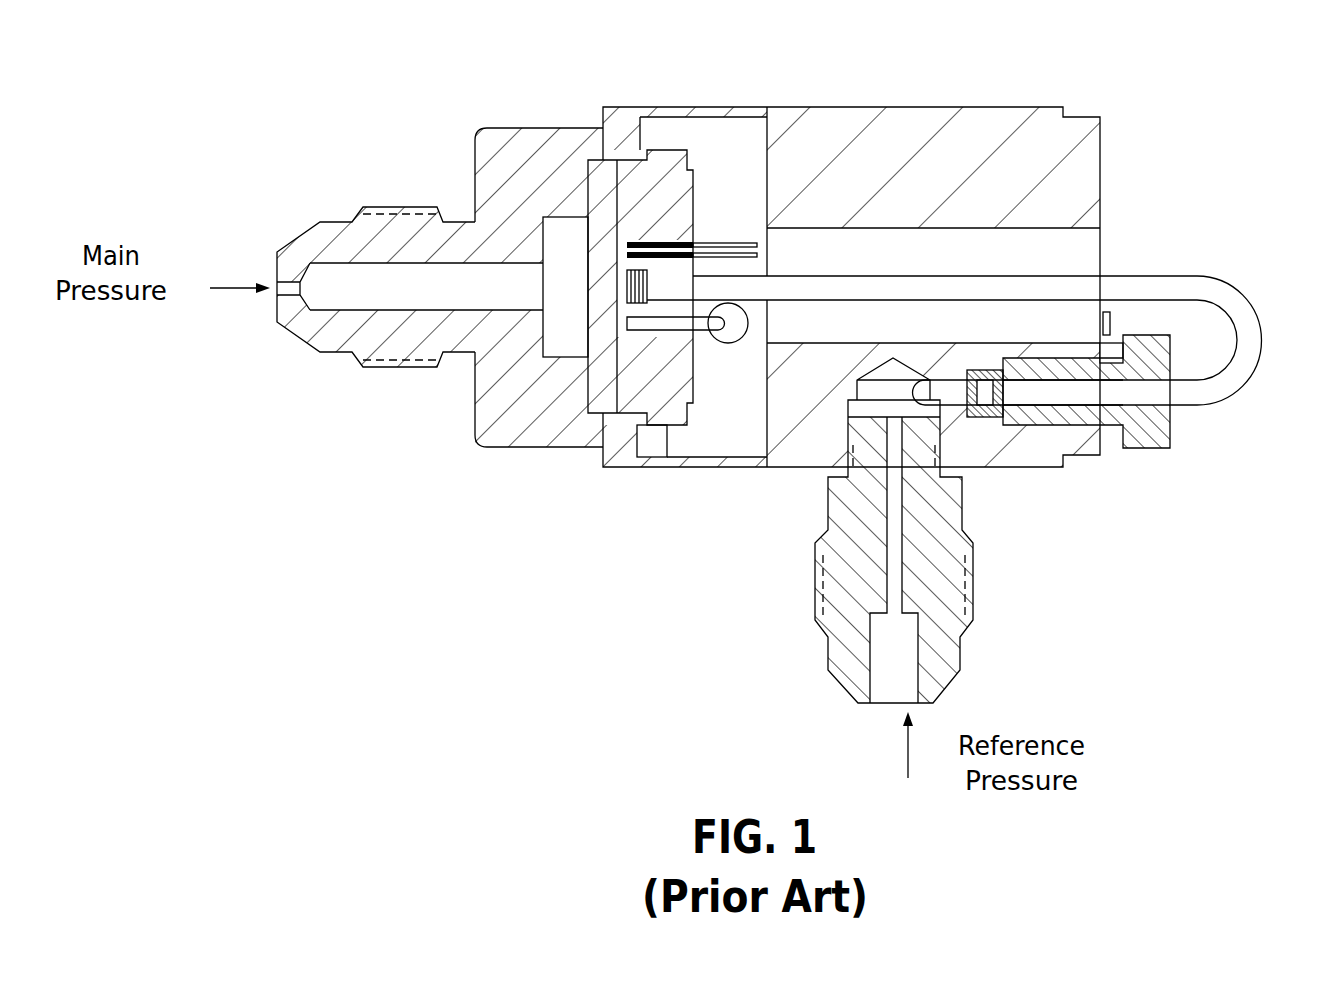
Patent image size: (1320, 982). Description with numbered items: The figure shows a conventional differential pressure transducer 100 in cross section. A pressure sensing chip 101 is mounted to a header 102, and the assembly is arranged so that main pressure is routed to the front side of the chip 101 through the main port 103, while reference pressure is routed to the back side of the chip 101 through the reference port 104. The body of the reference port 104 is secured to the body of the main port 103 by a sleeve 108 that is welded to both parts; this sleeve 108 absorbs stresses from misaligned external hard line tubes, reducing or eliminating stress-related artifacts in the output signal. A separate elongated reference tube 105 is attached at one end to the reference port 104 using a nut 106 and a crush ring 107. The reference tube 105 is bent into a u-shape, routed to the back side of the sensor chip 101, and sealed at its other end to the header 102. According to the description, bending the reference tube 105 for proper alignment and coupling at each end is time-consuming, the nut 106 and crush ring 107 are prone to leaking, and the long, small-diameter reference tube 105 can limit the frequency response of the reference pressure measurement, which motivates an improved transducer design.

The differential pressure transducer 100 is at (792, 55).
The pressure sensing chip 101 is at (627, 322).
The header 102 is at (667, 440).
The main port 103 is at (389, 222).
The reference port 104 is at (846, 627).
The reference tube 105 is at (1133, 262).
The nut 106 is at (1178, 452).
The crush ring 107 is at (983, 427).
The sleeve 108 is at (687, 103).